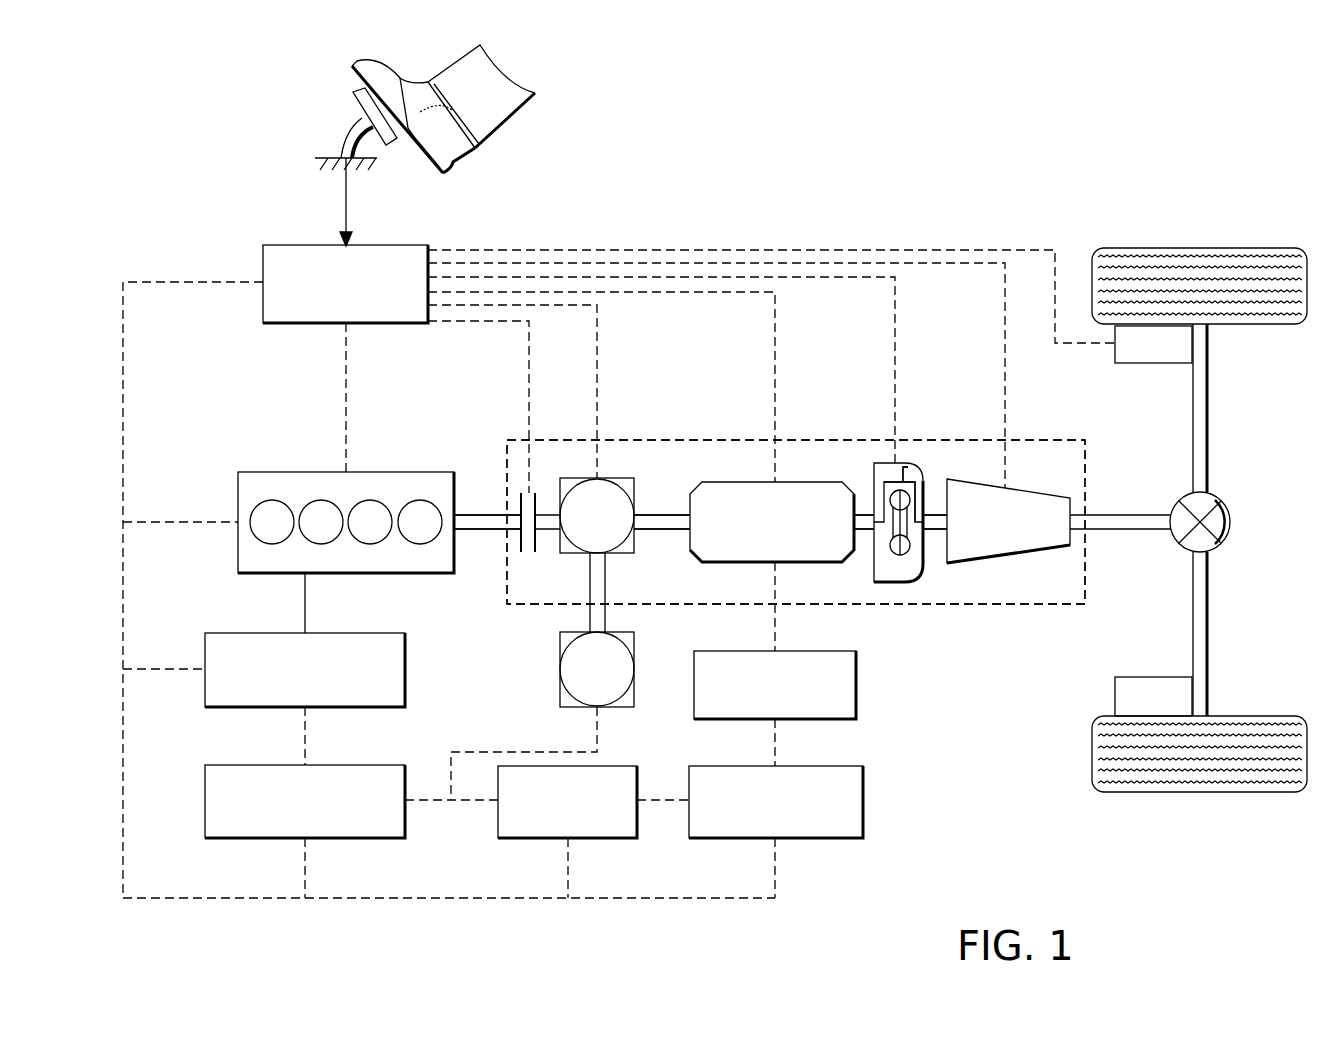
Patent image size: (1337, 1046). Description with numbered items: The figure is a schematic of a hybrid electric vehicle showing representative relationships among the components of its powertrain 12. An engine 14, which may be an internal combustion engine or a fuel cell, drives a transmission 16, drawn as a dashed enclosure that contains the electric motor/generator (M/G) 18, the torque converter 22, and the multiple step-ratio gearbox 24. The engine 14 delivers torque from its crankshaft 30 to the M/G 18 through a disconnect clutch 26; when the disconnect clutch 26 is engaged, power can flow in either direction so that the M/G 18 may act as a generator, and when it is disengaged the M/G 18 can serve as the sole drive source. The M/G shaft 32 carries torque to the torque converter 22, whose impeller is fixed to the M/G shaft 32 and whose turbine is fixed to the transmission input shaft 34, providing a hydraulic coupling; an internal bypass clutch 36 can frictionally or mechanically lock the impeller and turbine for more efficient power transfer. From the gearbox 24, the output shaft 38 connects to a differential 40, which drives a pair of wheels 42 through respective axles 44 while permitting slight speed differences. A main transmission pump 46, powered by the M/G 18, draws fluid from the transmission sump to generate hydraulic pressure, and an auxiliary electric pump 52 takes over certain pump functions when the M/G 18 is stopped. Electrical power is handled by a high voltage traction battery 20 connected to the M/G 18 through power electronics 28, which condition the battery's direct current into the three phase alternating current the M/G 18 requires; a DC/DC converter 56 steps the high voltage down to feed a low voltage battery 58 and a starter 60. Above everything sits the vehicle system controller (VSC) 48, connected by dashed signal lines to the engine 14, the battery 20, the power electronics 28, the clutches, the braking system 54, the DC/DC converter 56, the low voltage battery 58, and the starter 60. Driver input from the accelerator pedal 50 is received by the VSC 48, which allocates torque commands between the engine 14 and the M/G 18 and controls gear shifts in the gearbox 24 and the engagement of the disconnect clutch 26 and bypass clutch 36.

The powertrain 12 is at (895, 158).
The engine 14 is at (298, 472).
The transmission 16 is at (848, 440).
The electric motor/generator (M/G) 18 is at (742, 482).
The high voltage traction battery 20 is at (866, 803).
The torque converter 22 is at (898, 582).
The gearbox 24 is at (1010, 560).
The disconnect clutch 26 is at (519, 540).
The power electronics 28 is at (858, 708).
The crankshaft 30 is at (492, 515).
The M/G shaft 32 is at (644, 514).
The transmission input shaft 34 is at (933, 513).
The bypass clutch 36 is at (905, 466).
The output shaft 38 is at (1110, 513).
The differential 40 is at (1232, 522).
The wheels 42 is at (1202, 248).
The axles 44 is at (1210, 410).
The main transmission pump 46 is at (605, 478).
The vehicle system controller (VSC) 48 is at (302, 245).
The accelerator pedal 50 is at (355, 100).
The auxiliary electric pump 52 is at (638, 653).
The braking system 54 is at (1115, 355).
The DC/DC converter 56 is at (625, 765).
The low voltage battery 58 is at (205, 825).
The starter 60 is at (408, 665).